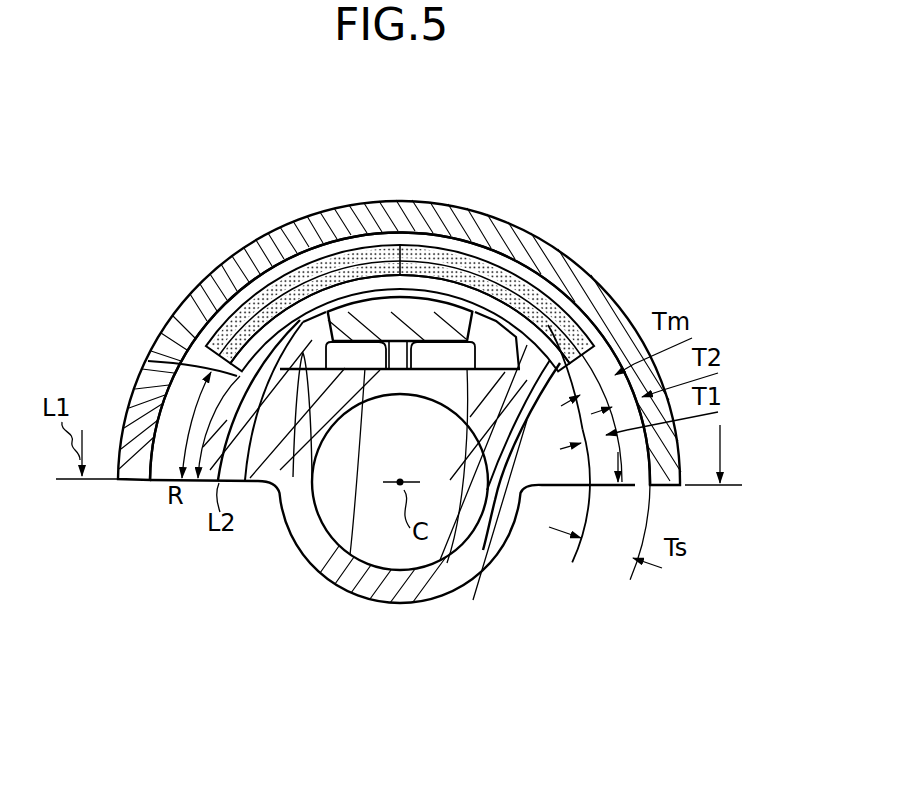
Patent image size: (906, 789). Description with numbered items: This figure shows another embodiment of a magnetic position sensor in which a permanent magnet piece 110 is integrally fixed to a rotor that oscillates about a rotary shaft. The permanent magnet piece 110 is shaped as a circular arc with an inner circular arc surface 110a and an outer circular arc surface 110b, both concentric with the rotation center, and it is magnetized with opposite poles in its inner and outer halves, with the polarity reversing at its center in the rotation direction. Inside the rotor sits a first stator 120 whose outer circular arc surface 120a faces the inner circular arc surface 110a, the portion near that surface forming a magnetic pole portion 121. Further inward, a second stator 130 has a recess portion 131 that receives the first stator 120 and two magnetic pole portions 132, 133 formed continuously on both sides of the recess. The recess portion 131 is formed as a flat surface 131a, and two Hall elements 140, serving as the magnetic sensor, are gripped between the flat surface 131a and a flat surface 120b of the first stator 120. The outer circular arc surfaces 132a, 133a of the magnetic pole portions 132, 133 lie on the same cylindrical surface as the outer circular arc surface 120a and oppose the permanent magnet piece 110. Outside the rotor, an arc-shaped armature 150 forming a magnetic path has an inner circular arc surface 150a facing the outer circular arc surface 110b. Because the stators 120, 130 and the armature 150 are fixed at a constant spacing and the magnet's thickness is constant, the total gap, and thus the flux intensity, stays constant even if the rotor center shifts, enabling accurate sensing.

The permanent magnet piece 110 is at (468, 247).
The inner circular arc surface 110a is at (537, 305).
The outer circular arc surface 110b is at (464, 252).
The first stator 120 is at (330, 228).
The outer circular arc surface 120a is at (372, 310).
The flat surface 120b is at (405, 372).
The magnetic pole portion 121 is at (457, 257).
The second stator 130 is at (359, 608).
The recess portion 131 is at (350, 557).
The flat surface 131a is at (300, 550).
The magnetic pole portion 132 is at (248, 448).
The outer circular arc surface 132a is at (190, 362).
The magnetic pole portion 133 is at (560, 425).
The outer circular arc surface 133a is at (498, 535).
The Hall elements 140 is at (347, 372).
The armature 150 is at (421, 197).
The inner circular arc surface 150a is at (372, 232).